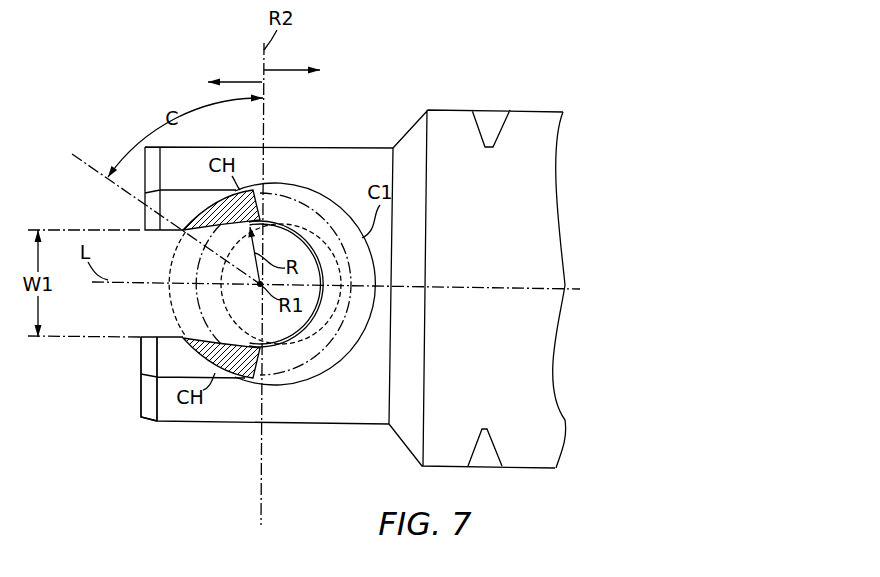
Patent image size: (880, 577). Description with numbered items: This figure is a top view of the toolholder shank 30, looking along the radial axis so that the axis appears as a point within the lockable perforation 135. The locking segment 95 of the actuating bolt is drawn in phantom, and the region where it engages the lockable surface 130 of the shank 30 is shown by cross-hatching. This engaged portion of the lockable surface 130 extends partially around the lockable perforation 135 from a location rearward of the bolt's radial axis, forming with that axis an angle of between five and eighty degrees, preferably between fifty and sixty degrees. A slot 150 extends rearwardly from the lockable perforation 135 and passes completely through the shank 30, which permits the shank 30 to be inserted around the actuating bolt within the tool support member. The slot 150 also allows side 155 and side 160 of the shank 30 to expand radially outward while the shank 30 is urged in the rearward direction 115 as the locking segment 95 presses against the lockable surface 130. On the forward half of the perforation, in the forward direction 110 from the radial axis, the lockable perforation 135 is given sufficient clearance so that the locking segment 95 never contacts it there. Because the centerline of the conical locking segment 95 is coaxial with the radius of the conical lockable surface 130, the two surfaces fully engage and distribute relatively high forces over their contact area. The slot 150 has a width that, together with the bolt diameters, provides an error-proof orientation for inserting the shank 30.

The shank 30 is at (193, 147).
The locking segment 95 is at (177, 262).
The forward direction 110 is at (285, 70).
The rearward direction 115 is at (243, 82).
The lockable surface 130 is at (142, 337).
The lockable perforation 135 is at (283, 240).
The slot 150 is at (160, 318).
The side 155 is at (153, 178).
The side 160 is at (140, 387).